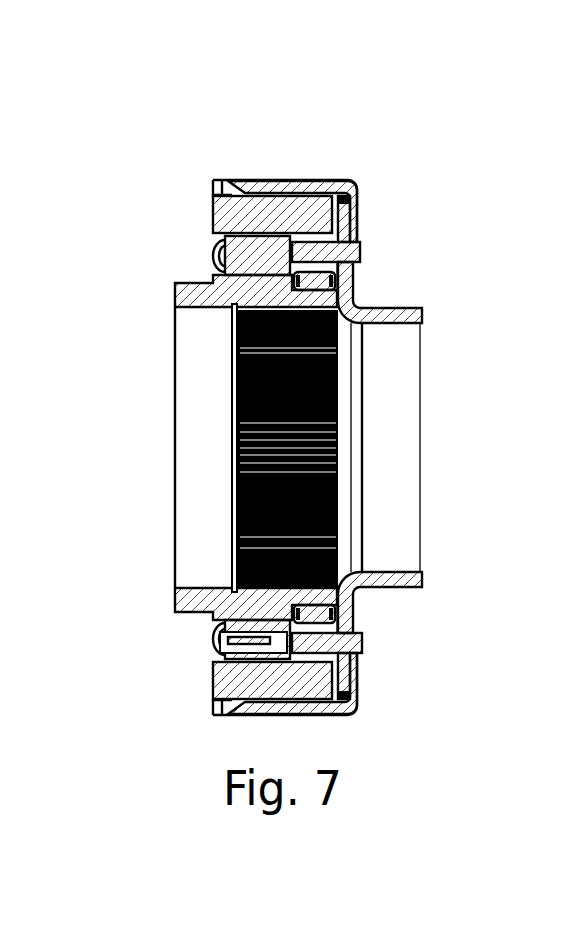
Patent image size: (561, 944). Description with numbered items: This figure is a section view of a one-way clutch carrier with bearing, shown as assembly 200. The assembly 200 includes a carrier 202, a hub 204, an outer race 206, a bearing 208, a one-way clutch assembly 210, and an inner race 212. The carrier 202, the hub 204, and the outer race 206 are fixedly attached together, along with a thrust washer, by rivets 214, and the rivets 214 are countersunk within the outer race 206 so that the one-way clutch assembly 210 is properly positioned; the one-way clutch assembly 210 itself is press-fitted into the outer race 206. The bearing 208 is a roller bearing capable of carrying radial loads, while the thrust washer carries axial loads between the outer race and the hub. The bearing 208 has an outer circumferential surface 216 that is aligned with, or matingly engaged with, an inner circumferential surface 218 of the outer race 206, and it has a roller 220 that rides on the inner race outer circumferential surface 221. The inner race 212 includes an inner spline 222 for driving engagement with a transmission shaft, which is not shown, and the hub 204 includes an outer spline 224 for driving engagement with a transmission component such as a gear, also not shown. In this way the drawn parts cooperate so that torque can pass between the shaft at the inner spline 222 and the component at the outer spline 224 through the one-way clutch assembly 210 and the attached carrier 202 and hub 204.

The assembly 200 is at (413, 130).
The carrier 202 is at (355, 198).
The hub 204 is at (415, 317).
The outer race 206 is at (218, 213).
The bearing 208 is at (342, 277).
The one-way clutch assembly 210 is at (233, 255).
The inner race 212 is at (188, 300).
The rivets 214 is at (357, 248).
The outer circumferential surface 216 is at (363, 640).
The inner circumferential surface 218 is at (330, 605).
The roller 220 is at (363, 592).
The inner race outer circumferential surface 221 is at (285, 635).
The inner spline 222 is at (235, 558).
The outer spline 224 is at (363, 618).